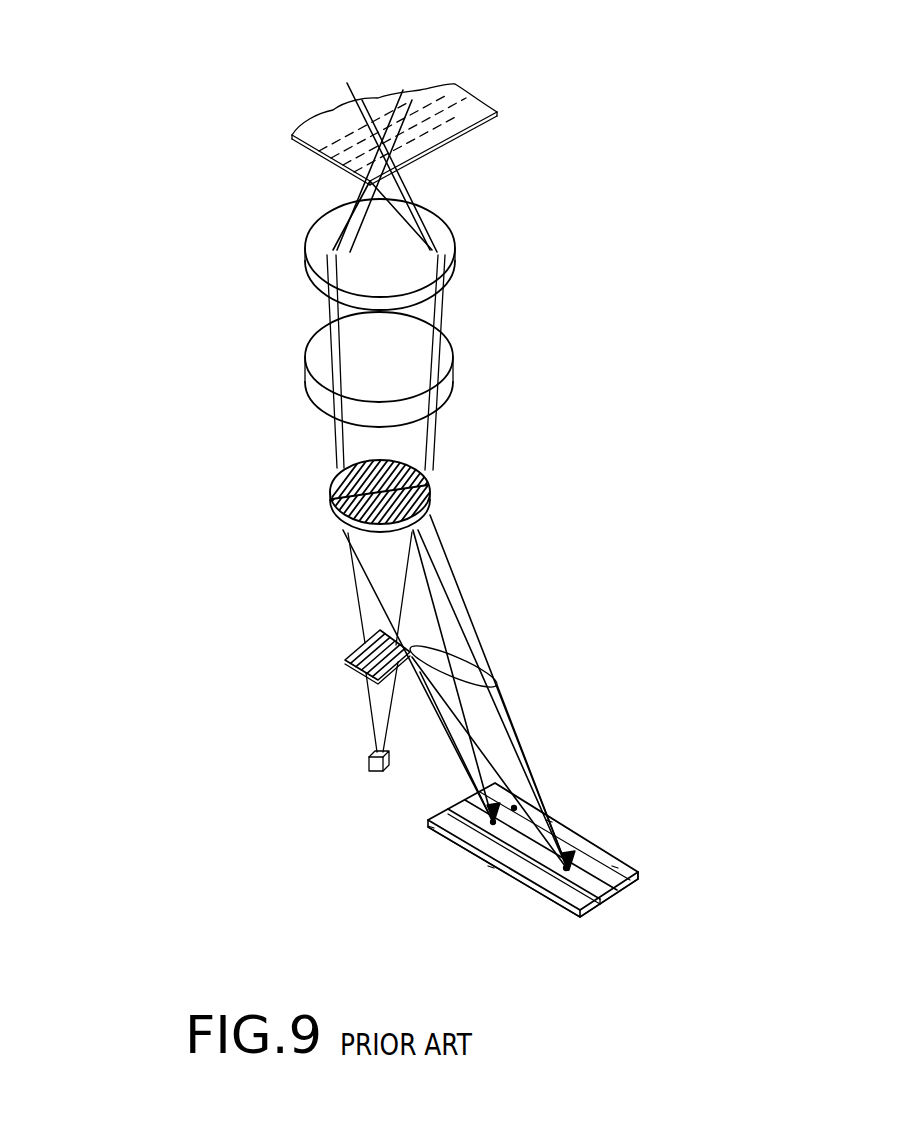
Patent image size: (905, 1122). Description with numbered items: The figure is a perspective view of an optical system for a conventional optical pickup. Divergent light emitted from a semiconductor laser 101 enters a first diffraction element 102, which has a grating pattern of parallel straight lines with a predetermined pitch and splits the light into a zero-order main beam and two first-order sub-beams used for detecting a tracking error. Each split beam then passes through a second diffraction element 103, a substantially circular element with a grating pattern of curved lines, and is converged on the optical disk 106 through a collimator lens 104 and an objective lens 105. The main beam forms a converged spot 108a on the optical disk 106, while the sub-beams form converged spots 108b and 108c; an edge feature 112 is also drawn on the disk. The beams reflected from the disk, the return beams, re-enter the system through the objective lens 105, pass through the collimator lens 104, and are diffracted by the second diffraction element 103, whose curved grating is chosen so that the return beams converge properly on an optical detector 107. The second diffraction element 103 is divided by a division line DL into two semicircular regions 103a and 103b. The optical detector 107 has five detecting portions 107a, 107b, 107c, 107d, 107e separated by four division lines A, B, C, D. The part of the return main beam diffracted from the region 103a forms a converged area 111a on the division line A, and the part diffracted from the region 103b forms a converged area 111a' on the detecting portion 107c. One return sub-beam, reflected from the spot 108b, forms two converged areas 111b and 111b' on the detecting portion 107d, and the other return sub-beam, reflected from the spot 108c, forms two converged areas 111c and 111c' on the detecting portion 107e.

The semiconductor laser 101 is at (367, 760).
The first diffraction element 102 is at (350, 650).
The second diffraction element 103 is at (385, 496).
The semicircular region 103a is at (427, 480).
The semicircular region 103b is at (340, 515).
The division line DL is at (430, 503).
The collimator lens 104 is at (307, 367).
The objective lens 105 is at (305, 257).
The optical disk 106 is at (312, 152).
The converged spot 108a is at (377, 130).
The converged spot 108b is at (408, 113).
The converged spot 108c is at (307, 127).
The mask edge 112 is at (442, 97).
The optical detector 107 is at (535, 850).
The detecting portion 107a is at (612, 907).
The detecting portion 107b is at (622, 895).
The detecting portion 107c is at (455, 803).
The detecting portion 107d is at (560, 907).
The detecting portion 107e is at (640, 880).
The converged area 111a is at (560, 832).
The converged area 111b is at (524, 881).
The converged area 111c is at (576, 836).
The converged area 111a' is at (548, 769).
The converged area 111b' is at (462, 858).
The converged area 111c' is at (564, 776).
The division line A is at (615, 867).
The division line B is at (430, 826).
The division line C is at (548, 820).
The division line D is at (490, 866).